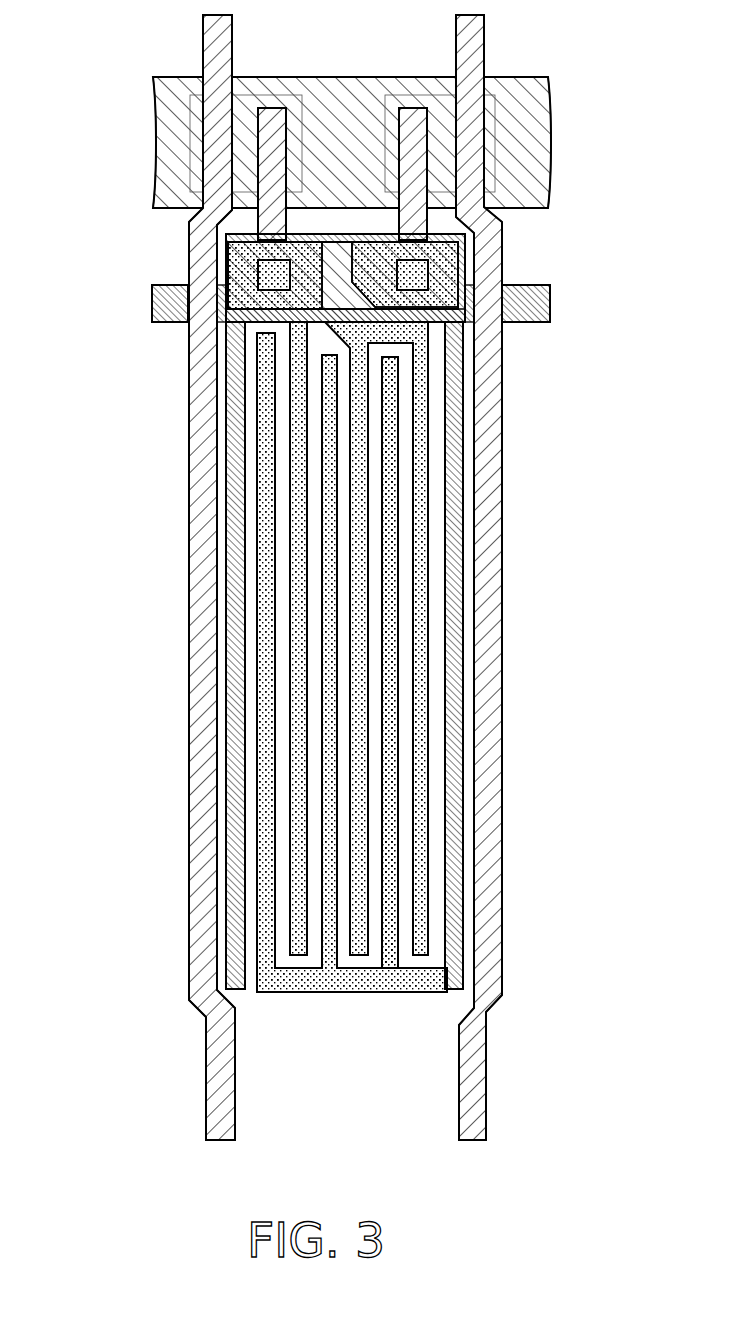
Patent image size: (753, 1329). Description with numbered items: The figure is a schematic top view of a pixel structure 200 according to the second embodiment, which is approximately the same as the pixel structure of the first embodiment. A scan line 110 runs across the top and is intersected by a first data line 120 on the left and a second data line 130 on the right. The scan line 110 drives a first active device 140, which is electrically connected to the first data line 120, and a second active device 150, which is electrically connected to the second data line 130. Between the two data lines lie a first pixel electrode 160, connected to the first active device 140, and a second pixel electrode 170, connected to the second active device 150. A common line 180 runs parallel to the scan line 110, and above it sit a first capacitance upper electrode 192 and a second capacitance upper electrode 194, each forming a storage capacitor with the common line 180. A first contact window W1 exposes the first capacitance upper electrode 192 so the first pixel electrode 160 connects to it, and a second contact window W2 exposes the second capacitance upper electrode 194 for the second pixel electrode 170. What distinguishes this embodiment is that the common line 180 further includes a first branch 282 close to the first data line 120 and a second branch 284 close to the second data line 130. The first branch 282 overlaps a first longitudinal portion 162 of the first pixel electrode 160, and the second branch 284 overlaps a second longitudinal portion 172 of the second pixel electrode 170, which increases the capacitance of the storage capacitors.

The scan line 110 is at (545, 130).
The first data line 120 is at (188, 227).
The second data line 130 is at (493, 270).
The first active device 140 is at (273, 95).
The second active device 150 is at (411, 95).
The first pixel electrode 160 is at (288, 586).
The first longitudinal portion 162 is at (297, 440).
The second pixel electrode 170 is at (402, 573).
The second longitudinal portion 172 is at (393, 455).
The common line 180 is at (550, 315).
The first capacitance upper electrode 192 is at (207, 312).
The second capacitance upper electrode 194 is at (462, 323).
The pixel structure 200 is at (355, 577).
The first branch 282 is at (243, 490).
The second branch 284 is at (463, 512).
The first contact window W1 is at (257, 268).
The second contact window W2 is at (429, 267).